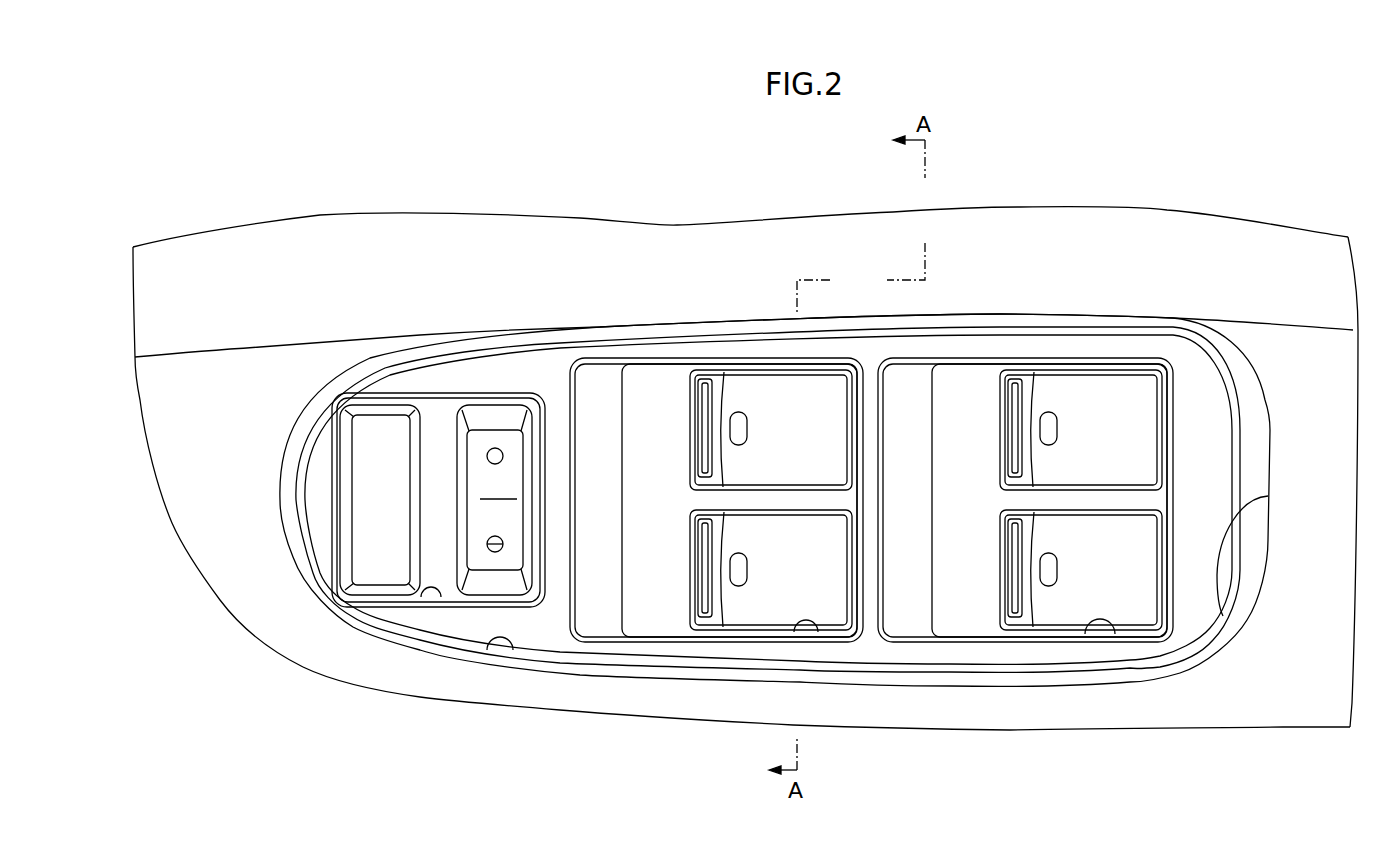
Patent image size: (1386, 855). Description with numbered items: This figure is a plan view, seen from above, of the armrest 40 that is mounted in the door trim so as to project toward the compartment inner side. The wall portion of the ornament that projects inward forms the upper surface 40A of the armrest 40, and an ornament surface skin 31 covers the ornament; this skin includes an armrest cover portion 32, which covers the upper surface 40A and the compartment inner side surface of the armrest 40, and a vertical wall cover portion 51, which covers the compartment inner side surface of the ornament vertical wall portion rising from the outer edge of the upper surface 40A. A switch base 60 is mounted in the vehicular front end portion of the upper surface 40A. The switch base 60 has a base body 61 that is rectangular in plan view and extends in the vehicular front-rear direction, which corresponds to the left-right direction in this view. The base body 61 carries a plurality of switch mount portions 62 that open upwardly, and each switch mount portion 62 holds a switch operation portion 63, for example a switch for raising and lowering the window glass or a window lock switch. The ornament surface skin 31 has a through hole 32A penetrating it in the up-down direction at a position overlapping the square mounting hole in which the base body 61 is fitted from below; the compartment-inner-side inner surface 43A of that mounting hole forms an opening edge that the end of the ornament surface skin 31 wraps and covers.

The ornament surface skin 31 is at (1333, 363).
The armrest cover portion 32 is at (1297, 693).
The through hole 32A is at (1223, 616).
The armrest 40 is at (305, 685).
The upper surface 40A is at (221, 548).
The inner surface 43A is at (512, 650).
The vertical wall cover portion 51 is at (1047, 237).
The switch base 60 is at (316, 469).
The base body 61 is at (1195, 578).
The switch mount portion 62 is at (442, 592).
The switch operation portion 63 is at (728, 460).